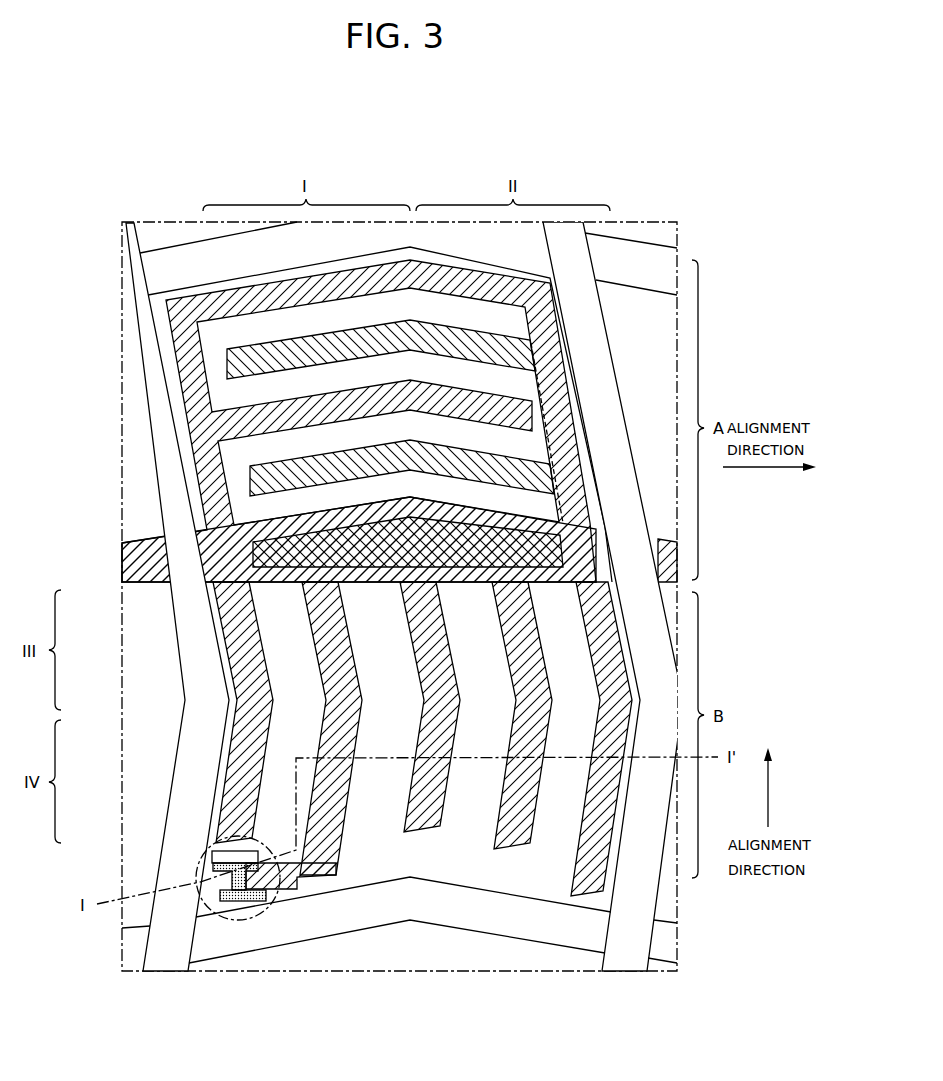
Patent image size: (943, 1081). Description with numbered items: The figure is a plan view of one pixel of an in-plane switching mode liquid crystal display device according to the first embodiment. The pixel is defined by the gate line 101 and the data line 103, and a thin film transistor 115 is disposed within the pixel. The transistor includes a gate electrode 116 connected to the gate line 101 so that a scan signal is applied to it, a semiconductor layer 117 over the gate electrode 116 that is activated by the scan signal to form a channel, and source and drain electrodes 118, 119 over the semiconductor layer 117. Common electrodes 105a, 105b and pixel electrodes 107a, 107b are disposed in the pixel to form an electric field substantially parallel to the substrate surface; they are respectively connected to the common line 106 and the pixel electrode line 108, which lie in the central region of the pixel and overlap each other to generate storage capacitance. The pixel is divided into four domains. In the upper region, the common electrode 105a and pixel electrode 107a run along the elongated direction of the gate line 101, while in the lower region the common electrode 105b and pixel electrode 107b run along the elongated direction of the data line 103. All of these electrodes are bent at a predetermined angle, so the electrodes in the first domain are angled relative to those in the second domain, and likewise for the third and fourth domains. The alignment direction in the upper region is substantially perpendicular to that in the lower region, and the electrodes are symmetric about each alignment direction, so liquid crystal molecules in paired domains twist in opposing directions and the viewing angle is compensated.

The gate line 101 is at (443, 918).
The data line 103 is at (180, 740).
The common electrode 105a is at (293, 297).
The common electrode 105b is at (410, 878).
The common line 106 is at (205, 558).
The pixel electrode 107a is at (258, 358).
The pixel electrode 107b is at (510, 850).
The pixel electrode line 108 is at (283, 538).
The thin film transistor 115 is at (203, 836).
The gate electrode 116 is at (238, 908).
The semiconductor layer 117 is at (212, 855).
The source electrode 118 is at (245, 874).
The drain electrode 119 is at (255, 903).